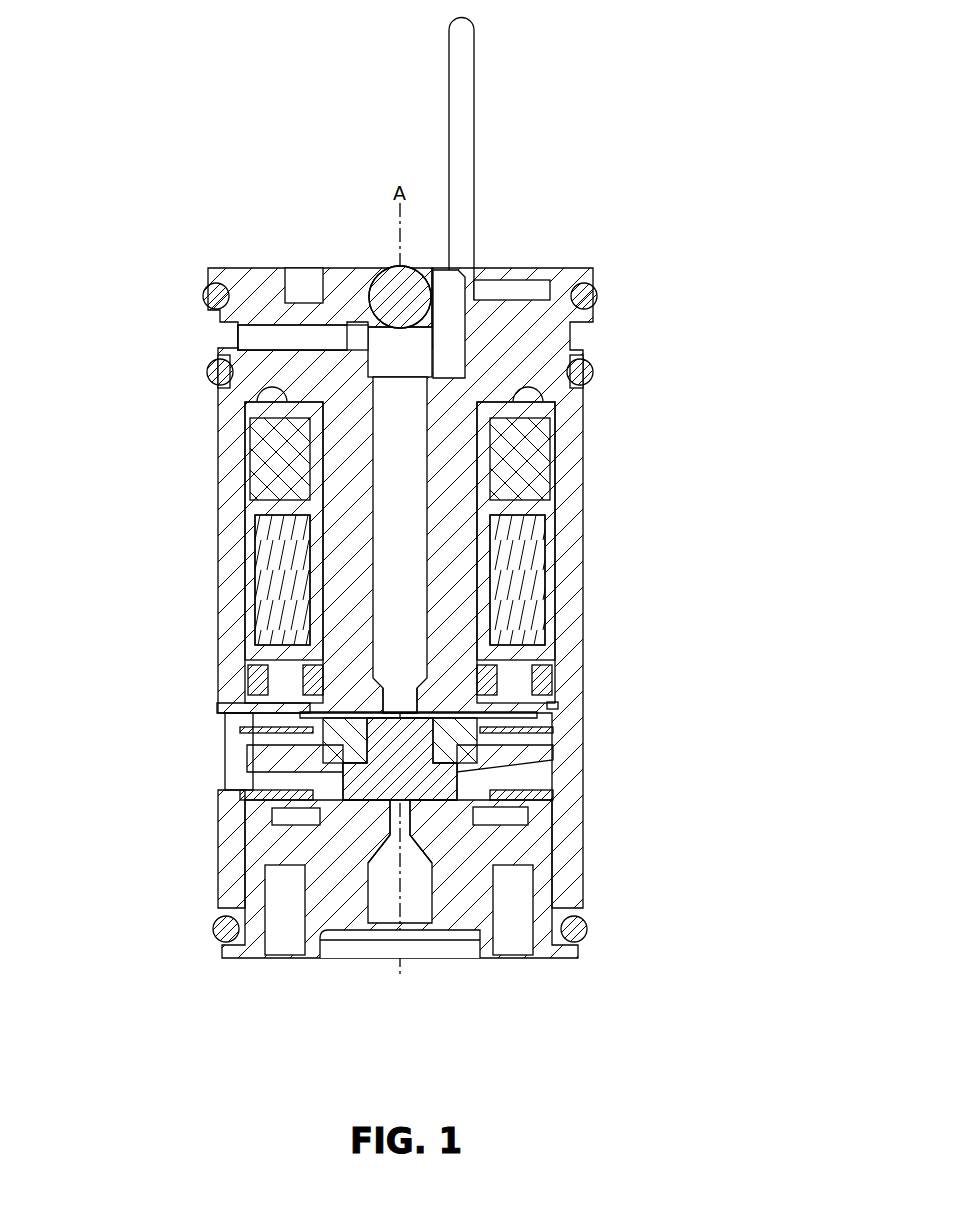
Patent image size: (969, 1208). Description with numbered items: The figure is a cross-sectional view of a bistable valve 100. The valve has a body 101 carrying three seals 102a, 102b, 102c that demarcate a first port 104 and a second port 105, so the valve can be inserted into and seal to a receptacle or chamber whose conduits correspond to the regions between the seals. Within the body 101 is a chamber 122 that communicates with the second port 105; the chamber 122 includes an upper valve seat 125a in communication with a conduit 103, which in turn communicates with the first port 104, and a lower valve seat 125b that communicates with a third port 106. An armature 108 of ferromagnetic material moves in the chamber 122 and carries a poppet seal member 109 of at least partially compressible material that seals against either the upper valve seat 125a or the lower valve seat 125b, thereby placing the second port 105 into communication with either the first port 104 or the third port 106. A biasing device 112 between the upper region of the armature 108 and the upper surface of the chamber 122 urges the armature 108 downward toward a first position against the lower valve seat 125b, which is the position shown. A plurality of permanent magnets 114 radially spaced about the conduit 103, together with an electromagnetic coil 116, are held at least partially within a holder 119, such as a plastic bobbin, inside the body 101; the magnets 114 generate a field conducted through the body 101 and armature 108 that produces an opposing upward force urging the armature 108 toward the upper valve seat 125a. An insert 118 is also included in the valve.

The bistable valve 100 is at (149, 1044).
The body 101 is at (262, 268).
The seal 102a is at (597, 297).
The seal 102b is at (593, 371).
The seal 102c is at (588, 930).
The conduit 103 is at (433, 395).
The first port 104 is at (197, 322).
The second port 105 is at (197, 713).
The third port 106 is at (443, 960).
The armature 108 is at (560, 766).
The poppet seal member 109 is at (560, 789).
The biasing device 112 is at (560, 742).
The plurality of permanent magnets 114 is at (553, 456).
The electromagnetic coil 116 is at (553, 568).
The insert 118 is at (262, 712).
The holder 119 is at (553, 508).
The chamber 122 is at (300, 806).
The upper valve seat 125a is at (432, 713).
The lower valve seat 125b is at (340, 805).